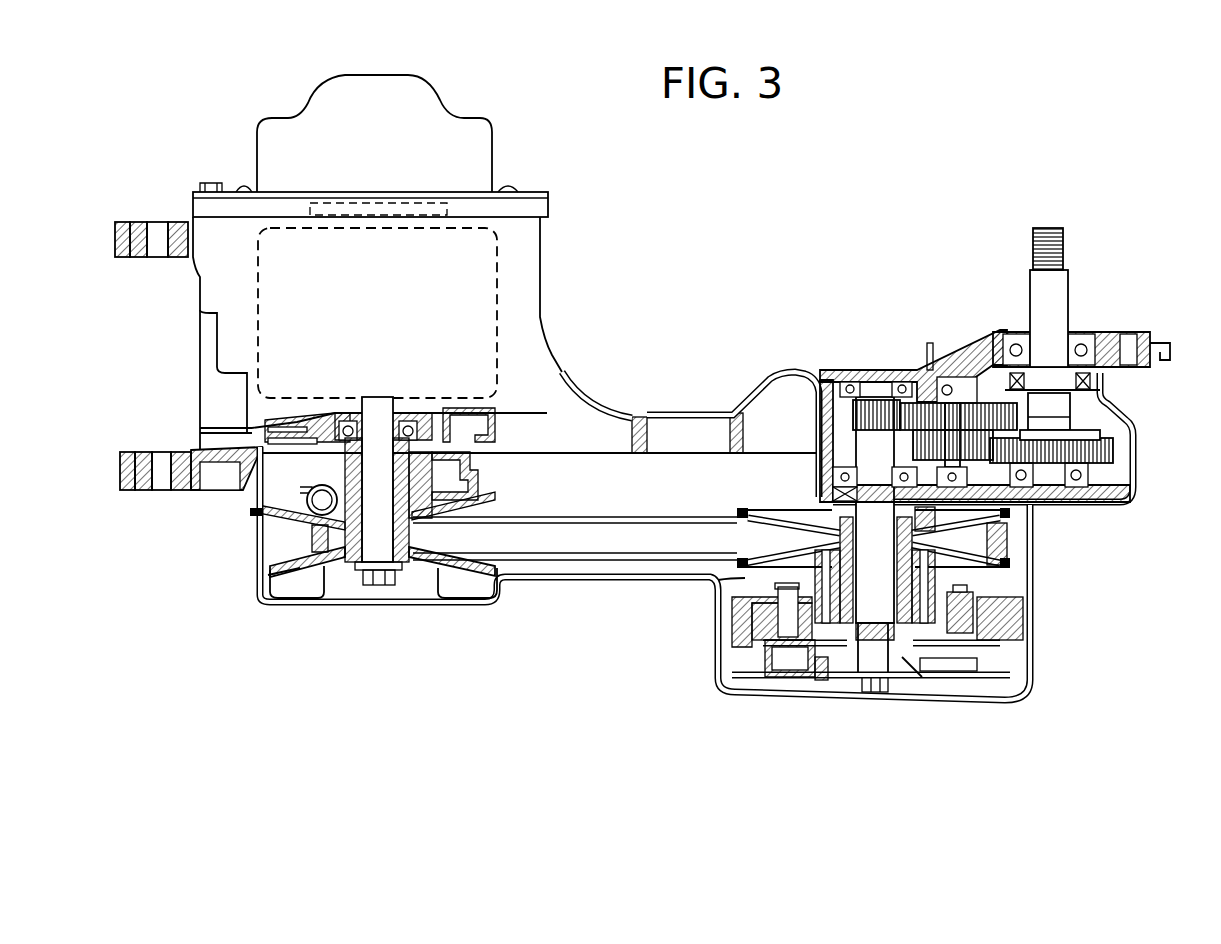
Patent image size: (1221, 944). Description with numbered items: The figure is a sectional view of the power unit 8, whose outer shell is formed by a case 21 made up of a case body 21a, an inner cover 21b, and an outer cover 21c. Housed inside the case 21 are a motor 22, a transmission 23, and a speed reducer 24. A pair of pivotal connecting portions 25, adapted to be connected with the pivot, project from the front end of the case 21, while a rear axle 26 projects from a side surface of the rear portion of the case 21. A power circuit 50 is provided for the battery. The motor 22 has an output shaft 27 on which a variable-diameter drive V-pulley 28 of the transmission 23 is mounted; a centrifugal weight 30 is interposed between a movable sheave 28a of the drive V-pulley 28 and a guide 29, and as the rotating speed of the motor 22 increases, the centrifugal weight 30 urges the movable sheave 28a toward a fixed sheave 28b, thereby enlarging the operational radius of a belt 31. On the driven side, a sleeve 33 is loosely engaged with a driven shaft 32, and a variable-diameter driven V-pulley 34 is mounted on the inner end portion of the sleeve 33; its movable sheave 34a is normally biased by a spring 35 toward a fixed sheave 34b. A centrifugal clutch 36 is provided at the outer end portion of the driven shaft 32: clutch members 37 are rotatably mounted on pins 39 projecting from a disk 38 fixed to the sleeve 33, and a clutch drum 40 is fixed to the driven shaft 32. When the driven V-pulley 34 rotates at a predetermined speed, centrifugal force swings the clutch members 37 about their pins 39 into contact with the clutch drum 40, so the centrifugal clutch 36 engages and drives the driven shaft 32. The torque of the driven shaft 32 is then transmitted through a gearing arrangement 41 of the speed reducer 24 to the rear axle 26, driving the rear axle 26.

The power unit 8 is at (698, 306).
The case 21 is at (668, 416).
The case body 21a is at (600, 400).
The inner cover 21b is at (1134, 480).
The outer cover 21c is at (622, 582).
The motor 22 is at (497, 284).
The transmission 23 is at (415, 572).
The speed reducer 24 is at (958, 352).
The pivotal connecting portions 25 is at (140, 258).
The rear axle 26 is at (1060, 308).
The output shaft 27 is at (378, 580).
The drive V-pulley 28 is at (302, 582).
The movable sheave 28a is at (290, 520).
The fixed sheave 28b is at (270, 575).
The guide 29 is at (315, 490).
The centrifugal weight 30 is at (255, 512).
The belt 31 is at (543, 540).
The driven shaft 32 is at (878, 662).
The sleeve 33 is at (850, 672).
The driven V-pulley 34 is at (1008, 540).
The movable sheave 34a is at (753, 547).
The fixed sheave 34b is at (772, 506).
The spring 35 is at (722, 592).
The centrifugal clutch 36 is at (1000, 662).
The clutch members 37 is at (745, 635).
The disk 38 is at (953, 672).
The pins 39 is at (975, 600).
The clutch drum 40 is at (1022, 620).
The gearing arrangement 41 is at (925, 420).
The power circuit 50 is at (395, 195).